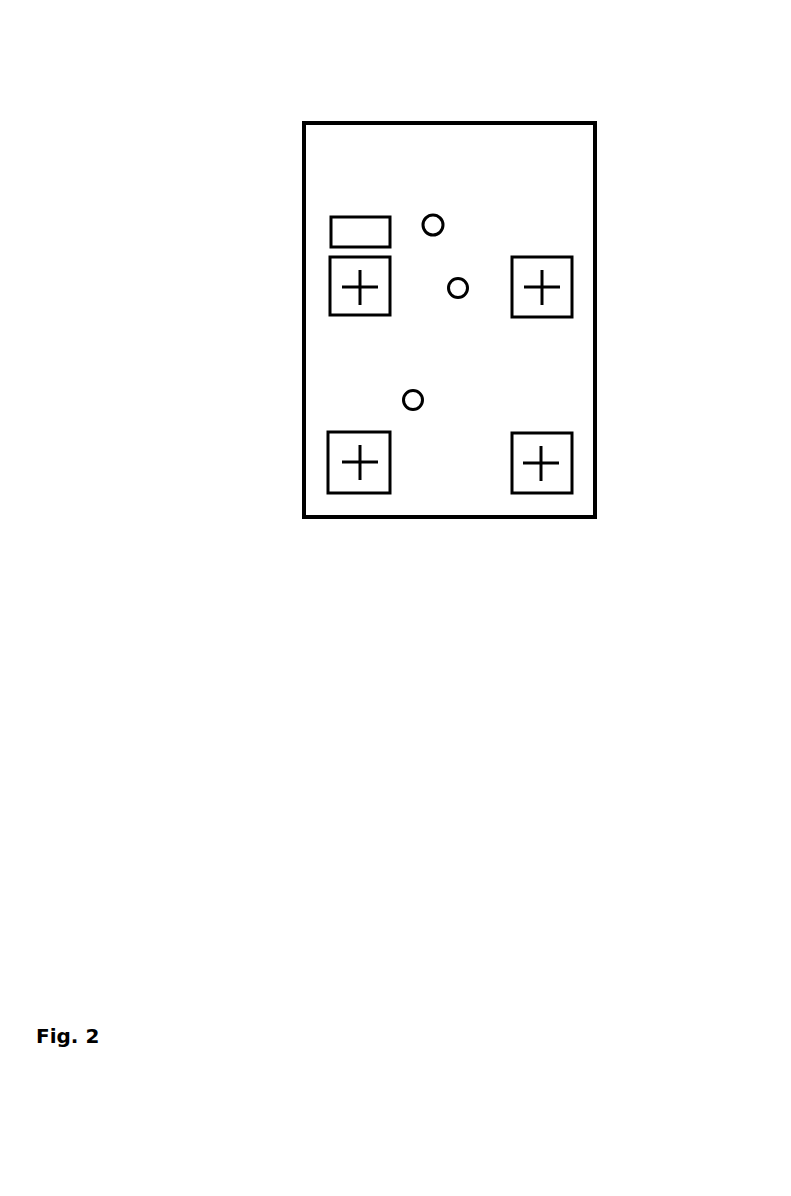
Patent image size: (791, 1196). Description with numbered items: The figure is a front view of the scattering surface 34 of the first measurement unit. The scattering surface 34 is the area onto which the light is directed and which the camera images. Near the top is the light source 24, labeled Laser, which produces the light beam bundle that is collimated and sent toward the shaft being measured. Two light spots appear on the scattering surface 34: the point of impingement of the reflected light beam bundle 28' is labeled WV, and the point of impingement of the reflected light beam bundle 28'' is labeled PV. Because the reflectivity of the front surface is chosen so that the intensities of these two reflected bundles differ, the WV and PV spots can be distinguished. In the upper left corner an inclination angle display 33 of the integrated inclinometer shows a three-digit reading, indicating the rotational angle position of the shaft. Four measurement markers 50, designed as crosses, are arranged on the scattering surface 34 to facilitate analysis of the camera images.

The light source 24 is at (431, 214).
The reflected light beam bundle 28' is at (473, 165).
The reflected light beam bundle 28'' is at (561, 407).
The display 33 is at (335, 235).
The scattering surface 34 is at (337, 377).
The measurement markers 50 is at (333, 479).